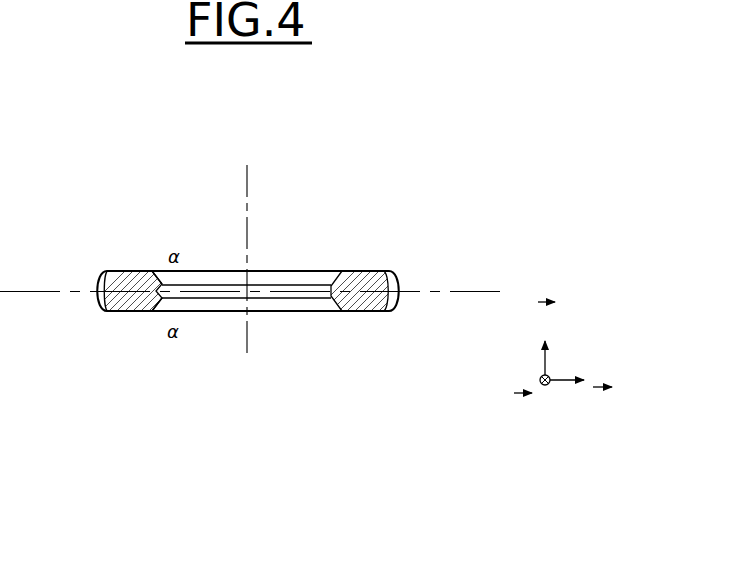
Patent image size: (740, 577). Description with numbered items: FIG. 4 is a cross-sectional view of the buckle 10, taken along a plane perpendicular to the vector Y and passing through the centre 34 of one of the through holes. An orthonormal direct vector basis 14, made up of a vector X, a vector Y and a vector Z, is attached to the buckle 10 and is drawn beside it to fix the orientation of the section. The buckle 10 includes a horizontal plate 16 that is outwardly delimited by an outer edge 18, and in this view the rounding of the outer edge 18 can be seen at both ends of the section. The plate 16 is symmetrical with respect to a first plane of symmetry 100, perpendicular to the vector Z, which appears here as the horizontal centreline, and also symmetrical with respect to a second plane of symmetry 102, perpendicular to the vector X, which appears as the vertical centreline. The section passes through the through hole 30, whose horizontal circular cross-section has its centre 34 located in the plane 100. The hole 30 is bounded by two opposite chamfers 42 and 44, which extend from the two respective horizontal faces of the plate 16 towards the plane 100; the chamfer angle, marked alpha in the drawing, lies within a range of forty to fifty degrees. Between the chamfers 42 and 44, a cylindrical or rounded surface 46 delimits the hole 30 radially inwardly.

The buckle 10 is at (363, 150).
The orthonormal direct vector basis 14 is at (589, 326).
The horizontal plate 16 is at (391, 269).
The outer edge 18 is at (391, 311).
The through hole 30 is at (317, 285).
The centre of the hole 34 is at (250, 293).
The chamfer 42 is at (162, 270).
The chamfer 44 is at (162, 312).
The cylindrical or rounded surface 46 is at (170, 297).
The first plane of symmetry 100 is at (456, 293).
The second plane of symmetry 102 is at (246, 190).